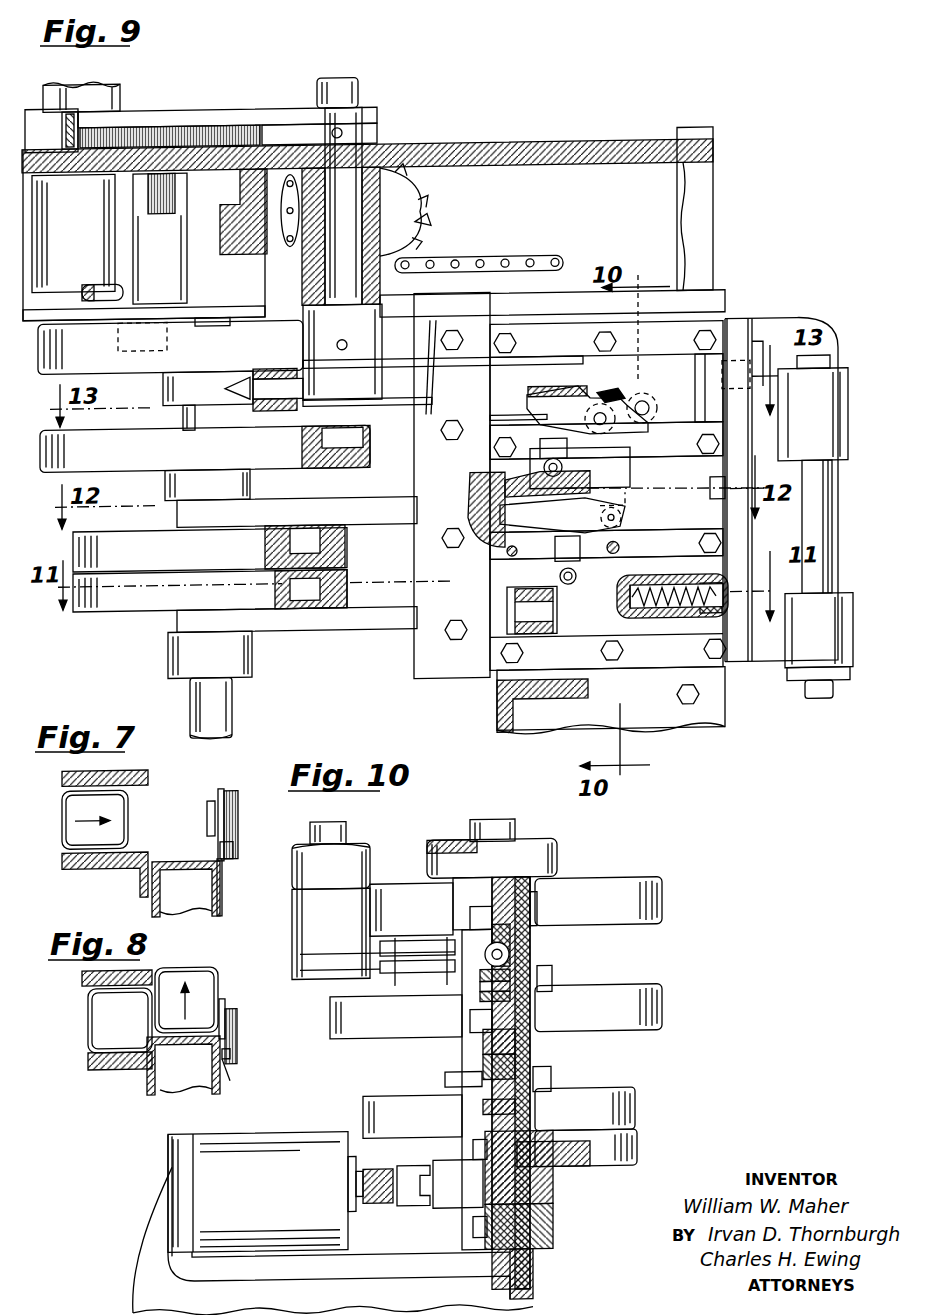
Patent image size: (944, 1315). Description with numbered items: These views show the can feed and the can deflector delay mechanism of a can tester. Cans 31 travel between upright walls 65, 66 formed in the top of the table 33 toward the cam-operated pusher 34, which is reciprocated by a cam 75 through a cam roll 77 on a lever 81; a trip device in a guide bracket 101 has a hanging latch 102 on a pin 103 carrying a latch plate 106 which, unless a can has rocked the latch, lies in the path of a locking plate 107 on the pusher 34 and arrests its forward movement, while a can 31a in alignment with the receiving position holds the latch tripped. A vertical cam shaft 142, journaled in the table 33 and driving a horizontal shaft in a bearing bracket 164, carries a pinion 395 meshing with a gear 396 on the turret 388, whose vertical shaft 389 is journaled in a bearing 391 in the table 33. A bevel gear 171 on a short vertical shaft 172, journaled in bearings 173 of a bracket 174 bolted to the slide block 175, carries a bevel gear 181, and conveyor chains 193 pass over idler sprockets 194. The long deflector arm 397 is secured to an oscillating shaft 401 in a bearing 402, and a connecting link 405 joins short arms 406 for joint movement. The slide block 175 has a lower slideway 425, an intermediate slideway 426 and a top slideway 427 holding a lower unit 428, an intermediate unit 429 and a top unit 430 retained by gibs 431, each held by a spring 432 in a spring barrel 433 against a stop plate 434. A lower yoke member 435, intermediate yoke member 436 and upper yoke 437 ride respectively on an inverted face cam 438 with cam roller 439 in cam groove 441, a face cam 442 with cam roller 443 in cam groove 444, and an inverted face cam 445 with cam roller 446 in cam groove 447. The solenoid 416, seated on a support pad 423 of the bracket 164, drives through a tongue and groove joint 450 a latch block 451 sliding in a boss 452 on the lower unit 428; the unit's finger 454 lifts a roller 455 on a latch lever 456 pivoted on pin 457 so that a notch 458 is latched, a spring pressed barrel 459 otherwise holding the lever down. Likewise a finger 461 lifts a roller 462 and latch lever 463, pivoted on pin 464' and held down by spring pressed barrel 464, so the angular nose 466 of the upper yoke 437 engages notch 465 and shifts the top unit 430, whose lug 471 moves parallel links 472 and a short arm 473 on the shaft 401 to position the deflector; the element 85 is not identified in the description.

In FIG. 9, the table 33 is at (713, 145).
In FIG. 9, the bearing 391 is at (73, 233).
In FIG. 9, the lever 81 is at (174, 238).
In FIG. 9, the vertical shaft 389 is at (84, 290).
In FIG. 9, the base plate 85 is at (106, 318).
In FIG. 9, the cam roll 77 is at (170, 335).
In FIG. 9, the cam 75 is at (170, 347).
In FIG. 10, the cam 75 is at (664, 901).
In FIG. 9, the vertical cam shaft 142 is at (205, 318).
In FIG. 9, the short arm 406 is at (342, 352).
In FIG. 10, the short arm 406 is at (331, 933).
In FIG. 9, the connecting link 405 is at (226, 389).
In FIG. 9, the upper yoke 437 is at (210, 417).
In FIG. 9, the lug 471 is at (535, 362).
In FIG. 10, the lug 471 is at (445, 960).
In FIG. 9, the parallel links 472 is at (430, 362).
In FIG. 10, the parallel links 472 is at (398, 960).
In FIG. 9, the gear 396 is at (66, 110).
In FIG. 9, the turret 388 is at (118, 88).
In FIG. 9, the long deflector arm 397 is at (203, 110).
In FIG. 9, the pinion 395 is at (235, 126).
In FIG. 9, the oscillating shaft 401 is at (358, 95).
In FIG. 10, the oscillating shaft 401 is at (347, 841).
In FIG. 9, the bearing 402 is at (405, 215).
In FIG. 10, the bearing 402 is at (370, 866).
In FIG. 9, the idler sprockets 194 is at (427, 230).
In FIG. 9, the conveyor chains 193 is at (512, 261).
In FIG. 9, the stop plate 434 is at (416, 662).
In FIG. 10, the stop plate 434 is at (472, 1063).
In FIG. 9, the gibs 431 is at (612, 684).
In FIG. 10, the gibs 431 is at (470, 908).
In FIG. 9, the bearing bracket 164 is at (500, 690).
In FIG. 10, the bearing bracket 164 is at (153, 1223).
In FIG. 9, the top unit 430 is at (738, 362).
In FIG. 10, the top unit 430 is at (552, 978).
In FIG. 9, the spring barrel 433 is at (722, 385).
In FIG. 10, the spring barrel 433 is at (512, 950).
In FIG. 9, the slide block 175 is at (703, 360).
In FIG. 10, the slide block 175 is at (528, 930).
In FIG. 9, the bevel gear 181 is at (845, 378).
In FIG. 9, the bearings 173 is at (848, 432).
In FIG. 9, the bracket 174 is at (794, 525).
In FIG. 9, the short vertical shaft 172 is at (826, 556).
In FIG. 9, the bevel gear 171 is at (846, 684).
In FIG. 9, the inverted face cam 445 is at (205, 448).
In FIG. 10, the inverted face cam 445 is at (664, 1011).
In FIG. 9, the cam roller 446 is at (322, 437).
In FIG. 9, the cam groove 447 is at (312, 452).
In FIG. 9, the intermediate yoke member 436 is at (291, 499).
In FIG. 9, the face cam 442 is at (210, 550).
In FIG. 10, the face cam 442 is at (638, 1107).
In FIG. 9, the cam roller 443 is at (290, 541).
In FIG. 9, the cam groove 444 is at (290, 557).
In FIG. 9, the inverted face cam 438 is at (210, 591).
In FIG. 10, the inverted face cam 438 is at (640, 1148).
In FIG. 9, the cam roller 439 is at (288, 591).
In FIG. 9, the cam groove 441 is at (285, 600).
In FIG. 9, the lower yoke member 435 is at (292, 643).
In FIG. 9, the angular nose 466 is at (538, 404).
In FIG. 9, the notch 465 is at (587, 410).
In FIG. 9, the spring pressed barrel 464 is at (617, 383).
In FIG. 9, the pin 464' is at (656, 397).
In FIG. 10, the pin 464' is at (545, 986).
In FIG. 9, the roller 462 is at (585, 418).
In FIG. 10, the roller 462 is at (530, 1022).
In FIG. 9, the latch lever 463 is at (490, 416).
In FIG. 10, the latch lever 463 is at (530, 1008).
In FIG. 9, the finger 461 is at (556, 448).
In FIG. 9, the top slideway 427 is at (630, 440).
In FIG. 10, the top slideway 427 is at (522, 916).
In FIG. 9, the spring pressed barrel 459 is at (546, 470).
In FIG. 9, the intermediate unit 429 is at (650, 471).
In FIG. 10, the intermediate unit 429 is at (530, 1062).
In FIG. 9, the notch 458 is at (470, 522).
In FIG. 9, the pin 457 is at (622, 517).
In FIG. 10, the pin 457 is at (470, 1086).
In FIG. 9, the latch lever 456 is at (508, 550).
In FIG. 10, the latch lever 456 is at (552, 1082).
In FIG. 9, the intermediate slideway 426 is at (627, 548).
In FIG. 10, the intermediate slideway 426 is at (530, 1046).
In FIG. 9, the finger 454 is at (571, 550).
In FIG. 9, the roller 455 is at (582, 535).
In FIG. 10, the roller 455 is at (520, 1110).
In FIG. 9, the lower slideway 425 is at (618, 553).
In FIG. 10, the lower slideway 425 is at (525, 1207).
In FIG. 9, the lower unit 428 is at (653, 600).
In FIG. 10, the lower unit 428 is at (520, 1185).
In FIG. 9, the spring 432 is at (652, 612).
In FIG. 10, the spring 432 is at (510, 958).
In FIG. 9, the tongue and groove joint 450 is at (540, 632).
In FIG. 10, the tongue and groove joint 450 is at (385, 1202).
In FIG. 7, the upright wall 65 is at (75, 777).
In FIG. 8, the upright wall 65 is at (85, 977).
In FIG. 7, the can 31 is at (62, 822).
In FIG. 8, the can 31 is at (90, 1020).
In FIG. 8, the can 31a is at (196, 968).
In FIG. 7, the upright wall 66 is at (80, 868).
In FIG. 8, the upright wall 66 is at (90, 1063).
In FIG. 7, the cam-operated pusher 34 is at (155, 905).
In FIG. 8, the cam-operated pusher 34 is at (183, 1065).
In FIG. 7, the pin 103 is at (224, 792).
In FIG. 8, the pin 103 is at (236, 1010).
In FIG. 7, the guide bracket 101 is at (220, 806).
In FIG. 7, the hanging latch 102 is at (238, 821).
In FIG. 8, the hanging latch 102 is at (240, 1022).
In FIG. 7, the latch plate 106 is at (220, 845).
In FIG. 8, the latch plate 106 is at (232, 1057).
In FIG. 7, the locking plate 107 is at (222, 884).
In FIG. 8, the locking plate 107 is at (226, 1074).
In FIG. 10, the short arm 473 is at (377, 965).
In FIG. 10, the latch block 451 is at (410, 1175).
In FIG. 10, the boss 452 is at (458, 1183).
In FIG. 10, the solenoid 416 is at (265, 1191).
In FIG. 10, the support pad 423 is at (178, 1166).